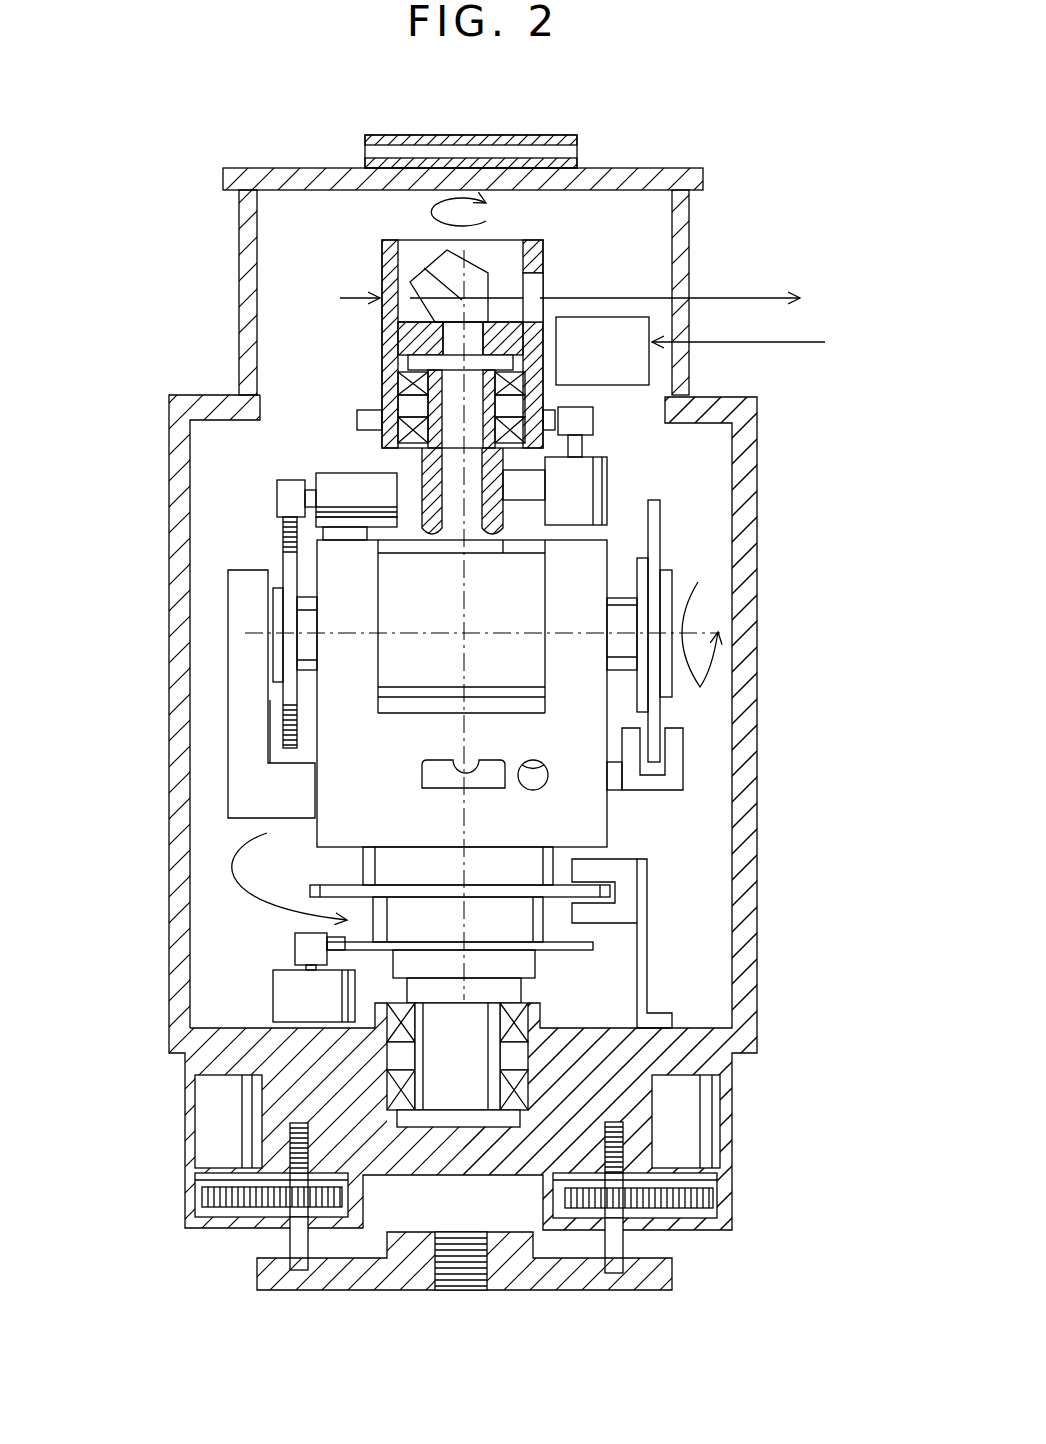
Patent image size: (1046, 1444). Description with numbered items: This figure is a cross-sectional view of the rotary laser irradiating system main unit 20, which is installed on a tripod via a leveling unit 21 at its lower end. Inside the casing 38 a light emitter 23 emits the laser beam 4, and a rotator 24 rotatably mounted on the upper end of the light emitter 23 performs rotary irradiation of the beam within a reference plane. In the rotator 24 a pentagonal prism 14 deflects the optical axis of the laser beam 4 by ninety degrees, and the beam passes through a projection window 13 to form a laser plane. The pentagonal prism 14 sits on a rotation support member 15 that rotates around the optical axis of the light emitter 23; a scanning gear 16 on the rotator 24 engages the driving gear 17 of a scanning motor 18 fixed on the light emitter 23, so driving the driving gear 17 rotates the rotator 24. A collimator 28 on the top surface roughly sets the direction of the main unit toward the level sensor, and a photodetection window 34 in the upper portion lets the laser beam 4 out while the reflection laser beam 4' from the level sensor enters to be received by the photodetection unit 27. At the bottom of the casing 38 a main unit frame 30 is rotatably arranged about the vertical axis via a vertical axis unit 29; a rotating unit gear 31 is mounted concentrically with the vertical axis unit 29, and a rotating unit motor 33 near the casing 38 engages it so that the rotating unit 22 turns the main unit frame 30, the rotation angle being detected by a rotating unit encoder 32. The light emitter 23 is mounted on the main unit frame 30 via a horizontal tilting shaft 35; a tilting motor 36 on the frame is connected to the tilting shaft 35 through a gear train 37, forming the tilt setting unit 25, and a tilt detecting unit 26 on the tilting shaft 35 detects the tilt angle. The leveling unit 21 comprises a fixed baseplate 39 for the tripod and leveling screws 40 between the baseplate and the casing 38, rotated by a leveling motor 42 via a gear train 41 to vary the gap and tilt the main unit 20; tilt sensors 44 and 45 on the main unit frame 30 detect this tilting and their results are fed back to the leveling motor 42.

The laser beam 4 is at (682, 266).
The reflection laser beam 4' is at (765, 312).
The projection window 13 is at (532, 285).
The pentagonal prism 14 is at (437, 268).
The rotation support member 15 is at (390, 333).
The scanning gear 16 is at (373, 413).
The driving gear 17 is at (577, 418).
The scanning motor 18 is at (582, 485).
The rotary laser irradiating system main unit 20 is at (790, 683).
The leveling unit 21 is at (753, 1107).
The rotating unit 22 is at (248, 938).
The light emitter 23 is at (407, 590).
The rotator 24 is at (340, 298).
The tilt setting unit 25 is at (232, 537).
The tilt detecting unit 26 is at (692, 723).
The photodetection unit 27 is at (618, 343).
The collimator 28 is at (542, 137).
The vertical axis unit 29 is at (433, 1098).
The main unit frame 30 is at (343, 793).
The rotating unit gear 31 is at (555, 960).
The rotating unit encoder 32 is at (618, 868).
The rotating unit motor 33 is at (300, 993).
The photodetection window 34 is at (678, 257).
The tilting shaft 35 is at (617, 622).
The tilting motor 36 is at (357, 482).
The gear train 37 is at (288, 562).
The casing 38 is at (165, 817).
The fixed baseplate 39 is at (672, 1282).
The leveling screws 40 is at (285, 1240).
The gear train 41 is at (213, 1223).
The leveling motor 42 is at (222, 1098).
The tilt sensor 44 is at (420, 772).
The tilt sensor 45 is at (548, 780).